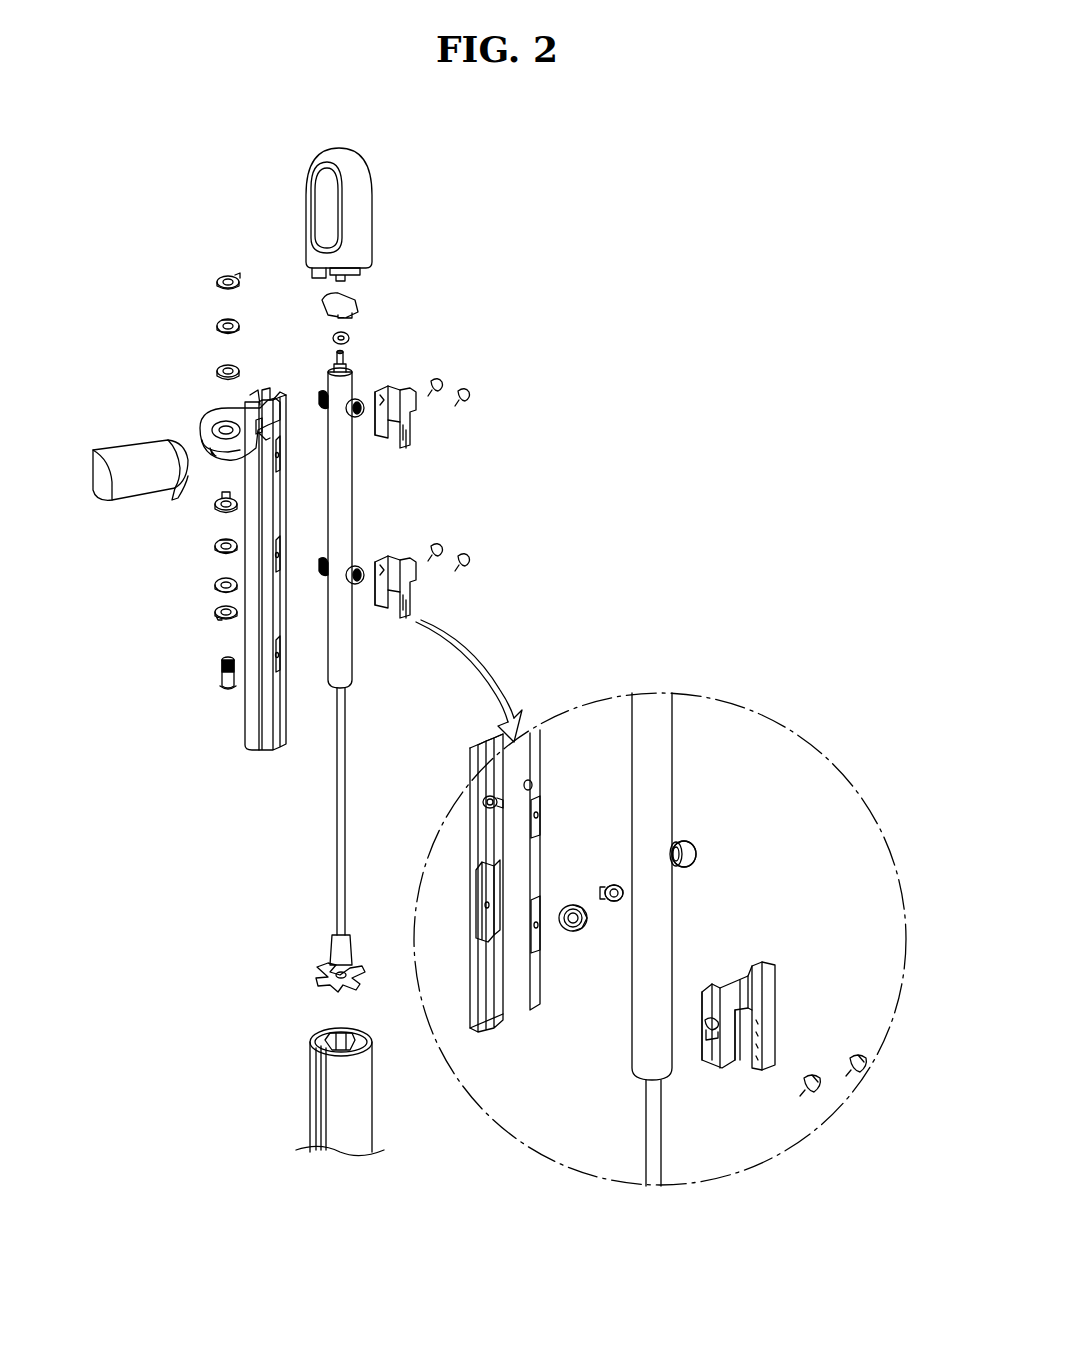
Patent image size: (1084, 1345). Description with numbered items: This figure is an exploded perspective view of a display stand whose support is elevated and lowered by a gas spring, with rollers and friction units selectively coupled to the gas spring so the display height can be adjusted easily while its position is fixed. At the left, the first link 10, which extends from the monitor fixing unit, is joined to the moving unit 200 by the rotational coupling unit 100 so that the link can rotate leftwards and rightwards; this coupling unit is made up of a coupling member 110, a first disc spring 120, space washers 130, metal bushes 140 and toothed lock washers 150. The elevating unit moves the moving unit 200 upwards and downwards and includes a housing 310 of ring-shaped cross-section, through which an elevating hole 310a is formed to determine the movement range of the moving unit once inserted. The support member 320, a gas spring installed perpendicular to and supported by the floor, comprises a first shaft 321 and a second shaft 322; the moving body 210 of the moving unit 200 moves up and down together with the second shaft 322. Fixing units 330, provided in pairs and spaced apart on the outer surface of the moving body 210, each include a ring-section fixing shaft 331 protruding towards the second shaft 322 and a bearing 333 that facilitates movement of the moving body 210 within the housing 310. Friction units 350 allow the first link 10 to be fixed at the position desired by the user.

The first link 10 is at (122, 452).
The rotational coupling unit 100 is at (180, 392).
The coupling member 110 is at (224, 675).
The first disc spring 120 is at (220, 586).
The space washer 130 is at (238, 326).
The bush 140 is at (238, 371).
The toothed lock washer 150 is at (222, 278).
The moving unit 200 is at (266, 770).
The moving body 210 is at (478, 880).
The housing 310 is at (368, 1086).
The elevating hole 310a is at (320, 1090).
The support member 320 is at (537, 1051).
The first shaft 321 is at (343, 756).
The second shaft 322 is at (345, 658).
The fixing unit 330 is at (360, 400).
The fixing shaft 331 is at (625, 898).
The bearing 333 is at (696, 850).
The friction unit 350 is at (434, 435).